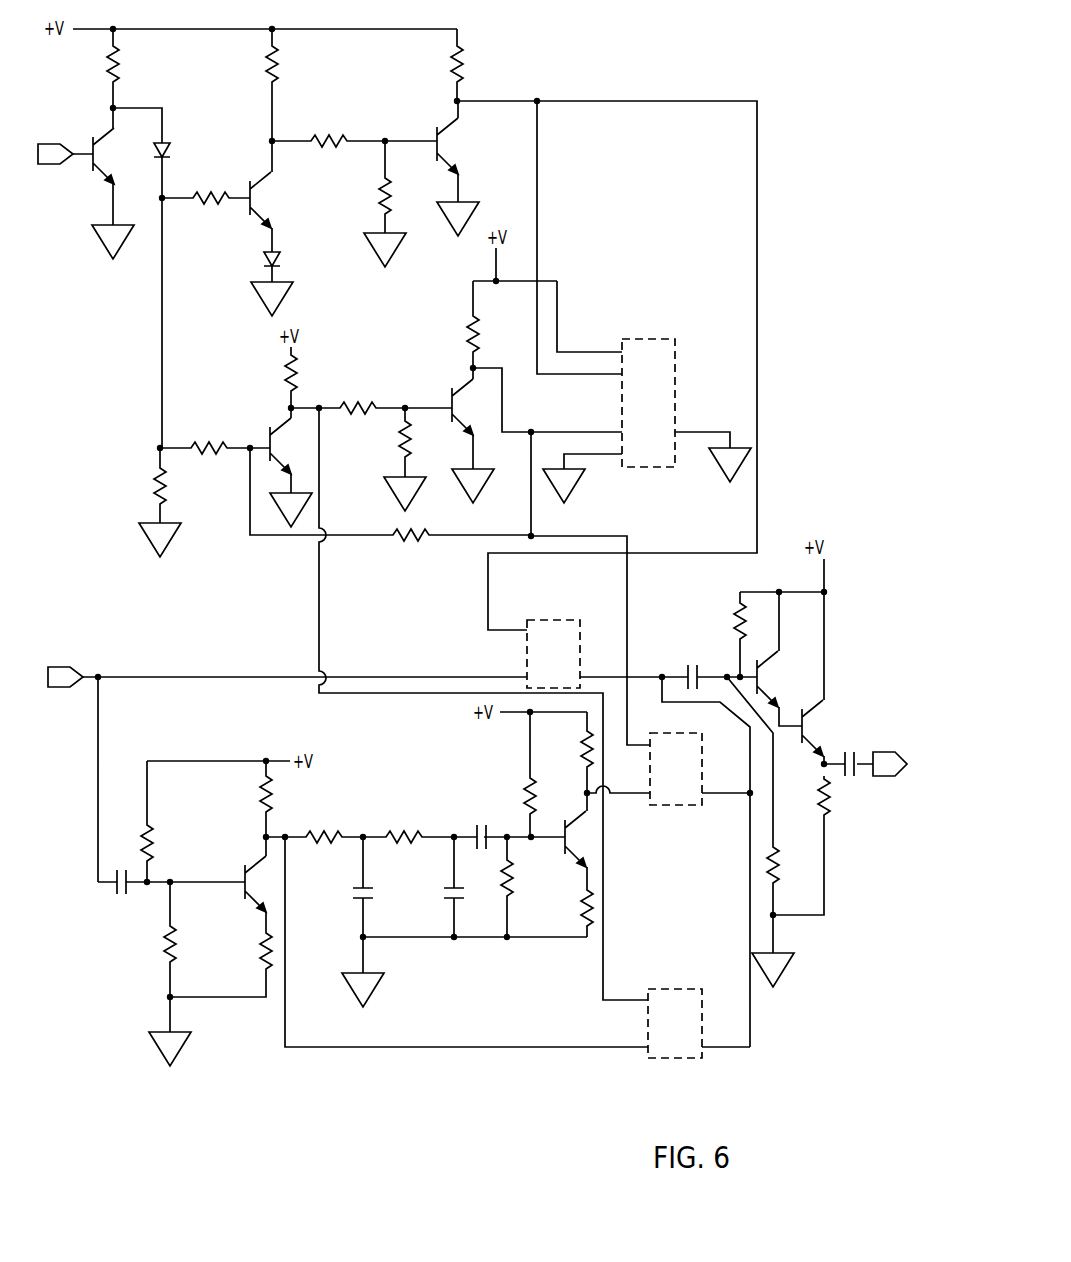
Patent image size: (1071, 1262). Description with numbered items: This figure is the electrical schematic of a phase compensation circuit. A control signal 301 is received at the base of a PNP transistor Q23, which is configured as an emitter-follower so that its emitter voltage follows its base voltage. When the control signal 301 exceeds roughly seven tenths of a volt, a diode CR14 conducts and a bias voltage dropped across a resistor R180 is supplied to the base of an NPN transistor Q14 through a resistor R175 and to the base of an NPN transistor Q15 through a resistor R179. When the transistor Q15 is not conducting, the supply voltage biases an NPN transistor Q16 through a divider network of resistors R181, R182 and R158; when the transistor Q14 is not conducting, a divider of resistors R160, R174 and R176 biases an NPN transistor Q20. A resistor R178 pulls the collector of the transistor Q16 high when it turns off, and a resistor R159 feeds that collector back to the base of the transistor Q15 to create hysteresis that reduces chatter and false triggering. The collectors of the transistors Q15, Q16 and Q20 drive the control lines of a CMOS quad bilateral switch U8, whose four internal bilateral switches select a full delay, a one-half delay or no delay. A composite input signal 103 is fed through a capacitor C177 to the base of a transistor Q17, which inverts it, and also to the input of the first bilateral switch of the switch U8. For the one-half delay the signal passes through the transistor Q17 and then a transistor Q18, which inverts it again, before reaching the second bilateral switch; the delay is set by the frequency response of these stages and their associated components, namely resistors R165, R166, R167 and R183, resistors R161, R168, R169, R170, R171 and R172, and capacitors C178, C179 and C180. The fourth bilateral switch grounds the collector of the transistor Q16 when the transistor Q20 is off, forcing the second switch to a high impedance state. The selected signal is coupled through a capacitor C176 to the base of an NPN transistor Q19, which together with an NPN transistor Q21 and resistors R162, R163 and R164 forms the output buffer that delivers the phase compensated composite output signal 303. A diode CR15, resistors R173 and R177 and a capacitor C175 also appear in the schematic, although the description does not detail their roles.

The composite input signal 103 is at (62, 666).
The control signal 301 is at (44, 165).
The phase compensated composite output signal 303 is at (875, 752).
The CMOS quad bilateral switch U8 is at (608, 686).
The NPN transistor Q14 is at (270, 200).
The NPN transistor Q15 is at (291, 446).
The NPN transistor Q16 is at (473, 407).
The transistor Q17 is at (266, 884).
The transistor Q18 is at (585, 839).
The NPN transistor Q19 is at (783, 679).
The NPN transistor Q20 is at (461, 146).
The NPN transistor Q21 is at (827, 728).
The PNP transistor Q23 is at (113, 156).
The diode CR14 is at (186, 152).
The diode CR15 is at (295, 256).
The resistor R158 is at (384, 439).
The resistor R159 is at (411, 547).
The resistor R160 is at (365, 196).
The resistor R161 is at (529, 878).
The resistor R162 is at (719, 621).
The resistor R163 is at (793, 865).
The resistor R164 is at (804, 797).
The resistor R165 is at (147, 944).
The resistor R166 is at (243, 951).
The resistor R167 is at (289, 794).
The resistor R168 is at (564, 908).
The resistor R169 is at (566, 749).
The resistor R170 is at (508, 796).
The resistor R171 is at (404, 852).
The resistor R172 is at (324, 852).
The resistor R173 is at (137, 64).
The resistor R174 is at (296, 64).
The resistor R175 is at (211, 188).
The resistor R176 is at (329, 130).
The resistor R177 is at (480, 64).
The resistor R178 is at (494, 334).
The resistor R179 is at (209, 437).
The resistor R180 is at (139, 486).
The resistor R181 is at (314, 373).
The resistor R182 is at (358, 397).
The resistor R183 is at (169, 843).
The capacitor C175 is at (854, 779).
The capacitor C176 is at (688, 665).
The capacitor C177 is at (120, 897).
The capacitor C178 is at (480, 849).
The capacitor C179 is at (343, 907).
The capacitor C180 is at (434, 907).